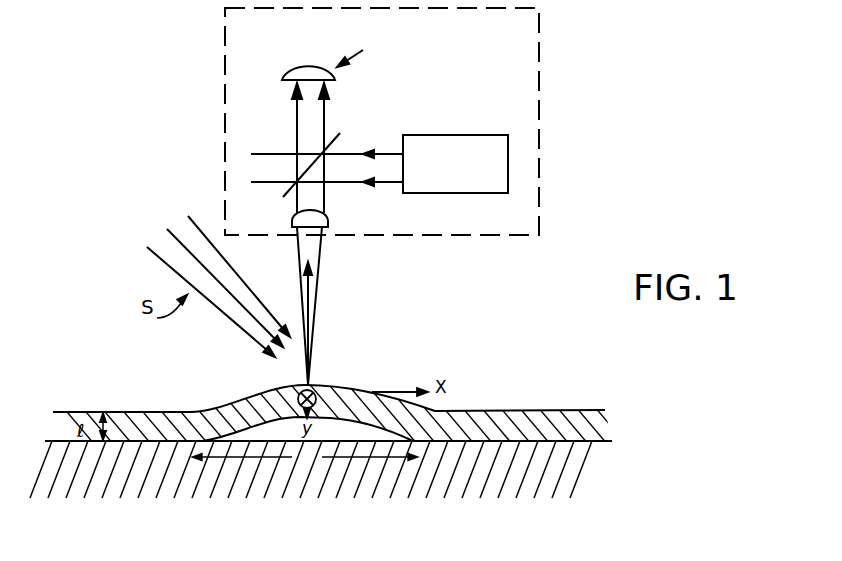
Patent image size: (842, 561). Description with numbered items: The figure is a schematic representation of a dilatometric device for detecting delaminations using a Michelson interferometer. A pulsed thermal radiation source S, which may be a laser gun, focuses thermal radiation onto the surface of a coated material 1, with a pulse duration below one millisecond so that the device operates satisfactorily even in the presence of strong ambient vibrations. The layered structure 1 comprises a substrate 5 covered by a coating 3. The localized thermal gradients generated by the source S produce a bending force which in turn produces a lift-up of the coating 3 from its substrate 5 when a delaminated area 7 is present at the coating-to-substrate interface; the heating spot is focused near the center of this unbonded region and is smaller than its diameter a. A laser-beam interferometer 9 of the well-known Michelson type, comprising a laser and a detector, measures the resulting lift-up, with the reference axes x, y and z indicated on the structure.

The coated material 1 is at (486, 402).
The coating 3 is at (531, 412).
The substrate 5 is at (586, 462).
The delaminated area 7 is at (339, 434).
The laser-beam interferometer 9 is at (541, 93).